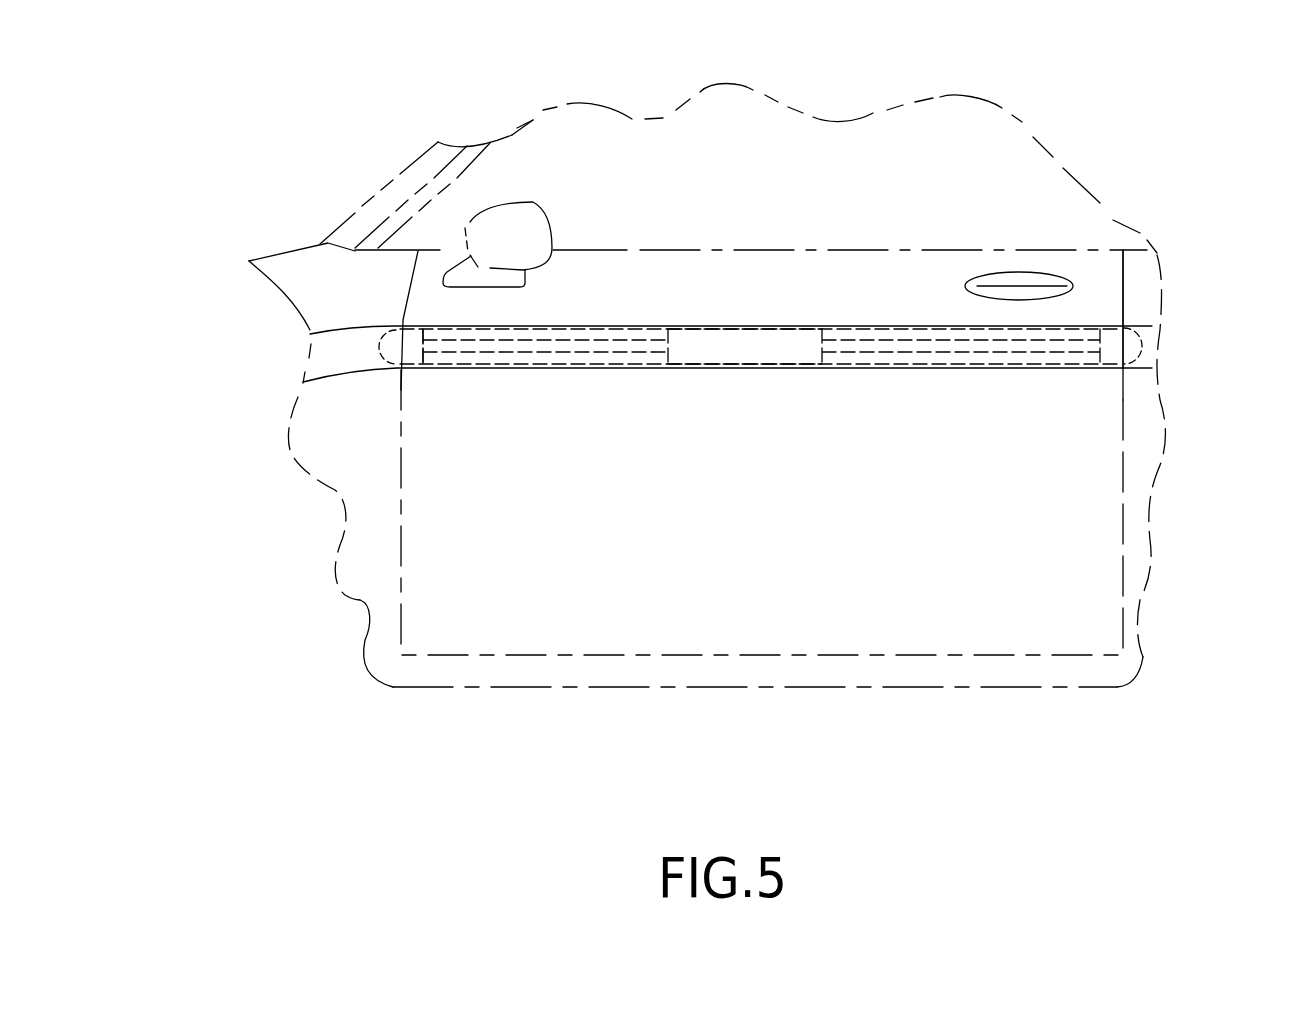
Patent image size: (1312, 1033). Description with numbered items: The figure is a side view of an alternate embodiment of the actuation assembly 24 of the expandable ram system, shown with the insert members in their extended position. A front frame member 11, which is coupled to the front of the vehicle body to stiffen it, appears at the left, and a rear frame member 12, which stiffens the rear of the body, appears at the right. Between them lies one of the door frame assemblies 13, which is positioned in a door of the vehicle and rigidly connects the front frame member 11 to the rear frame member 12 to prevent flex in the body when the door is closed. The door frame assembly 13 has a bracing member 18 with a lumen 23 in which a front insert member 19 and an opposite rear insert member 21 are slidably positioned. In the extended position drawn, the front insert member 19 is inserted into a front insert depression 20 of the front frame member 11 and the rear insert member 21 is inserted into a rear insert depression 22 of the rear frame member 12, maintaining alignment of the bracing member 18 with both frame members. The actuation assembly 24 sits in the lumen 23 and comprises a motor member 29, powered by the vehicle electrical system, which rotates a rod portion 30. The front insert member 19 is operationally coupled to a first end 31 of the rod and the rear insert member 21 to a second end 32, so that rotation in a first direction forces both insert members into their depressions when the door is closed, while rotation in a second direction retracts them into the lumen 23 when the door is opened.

The front frame member 11 is at (337, 328).
The rear frame member 12 is at (1147, 323).
The door frame assembly 13 is at (934, 612).
The bracing member 18 is at (875, 250).
The front insert member 19 is at (410, 352).
The front insert depression 20 is at (380, 346).
The rear insert member 21 is at (1133, 350).
The rear insert depression 22 is at (1145, 345).
The lumen 23 is at (925, 328).
The actuation assembly 24 is at (738, 403).
The motor member 29 is at (748, 343).
The rod portion 30 is at (592, 345).
The first end 31 is at (430, 348).
The second end 32 is at (1100, 343).